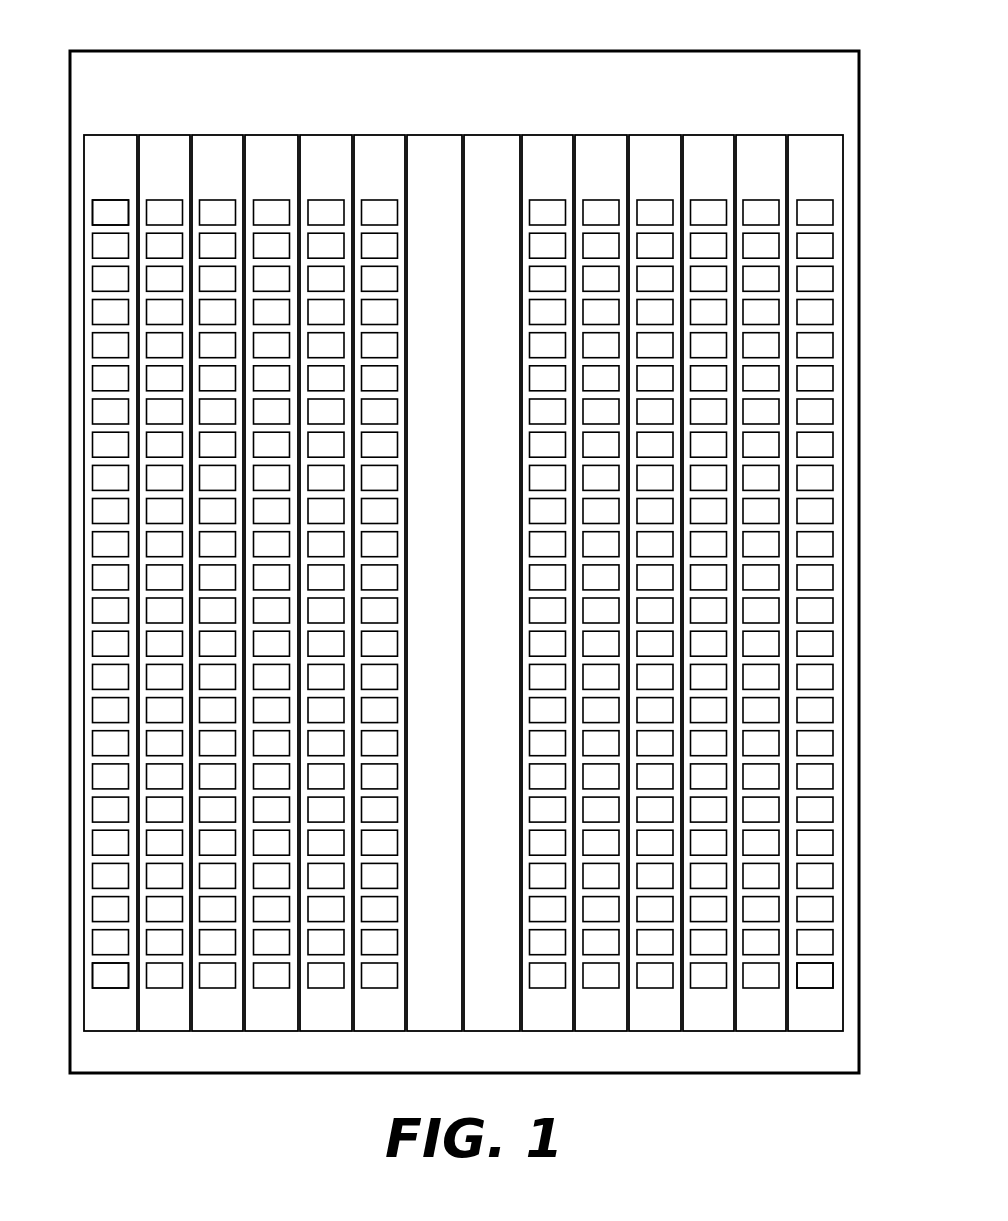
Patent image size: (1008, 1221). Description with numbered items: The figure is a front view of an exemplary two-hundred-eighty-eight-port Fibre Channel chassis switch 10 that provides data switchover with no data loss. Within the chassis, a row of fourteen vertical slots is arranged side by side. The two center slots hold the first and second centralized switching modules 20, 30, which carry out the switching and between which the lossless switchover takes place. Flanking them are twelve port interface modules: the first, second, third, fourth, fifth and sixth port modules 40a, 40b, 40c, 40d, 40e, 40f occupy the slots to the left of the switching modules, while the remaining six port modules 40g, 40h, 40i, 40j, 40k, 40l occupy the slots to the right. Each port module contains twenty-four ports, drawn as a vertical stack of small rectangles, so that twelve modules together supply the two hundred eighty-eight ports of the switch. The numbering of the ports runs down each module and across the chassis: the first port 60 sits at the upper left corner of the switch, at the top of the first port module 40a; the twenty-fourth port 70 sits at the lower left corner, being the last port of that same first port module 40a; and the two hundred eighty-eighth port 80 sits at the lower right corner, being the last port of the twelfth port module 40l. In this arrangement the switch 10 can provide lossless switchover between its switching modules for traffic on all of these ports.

The Fibre Channel chassis switch 10 is at (163, 45).
The first centralized switching module 20 is at (435, 134).
The second centralized switching module 30 is at (493, 134).
The first port module 40a is at (112, 134).
The second port module 40b is at (166, 134).
The third port module 40c is at (219, 134).
The fourth port module 40d is at (273, 134).
The fifth port module 40e is at (327, 134).
The sixth port module 40f is at (381, 134).
The port module PM_9 40g is at (549, 134).
The port module PM_10 40h is at (602, 134).
The port module PM_11 40i is at (656, 134).
The port module PM_12 40j is at (710, 134).
The port module PM_13 40k is at (762, 134).
The twelfth port module 40l is at (816, 134).
The first port 60 is at (86, 214).
The twenty-fourth port 70 is at (86, 975).
The two hundred eighty-eighth port 80 is at (844, 975).